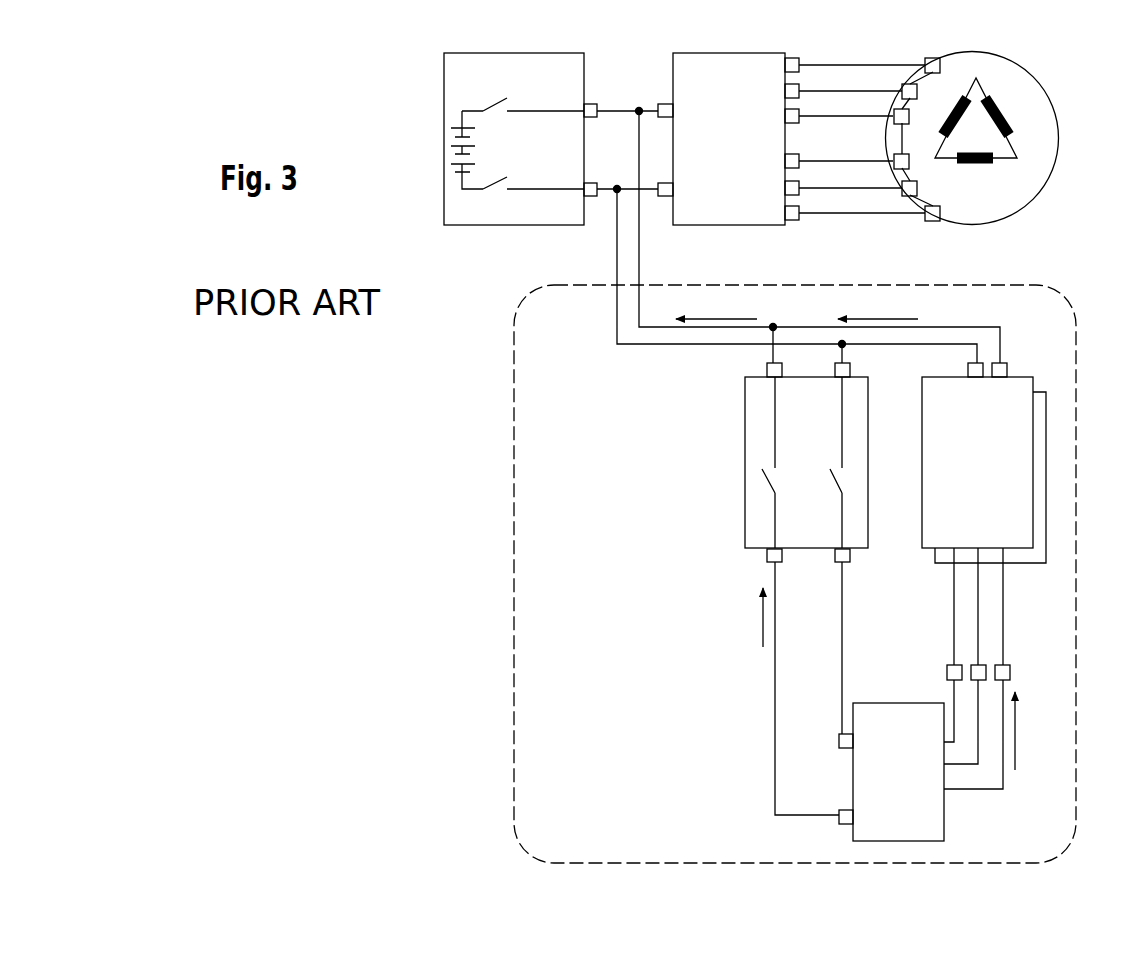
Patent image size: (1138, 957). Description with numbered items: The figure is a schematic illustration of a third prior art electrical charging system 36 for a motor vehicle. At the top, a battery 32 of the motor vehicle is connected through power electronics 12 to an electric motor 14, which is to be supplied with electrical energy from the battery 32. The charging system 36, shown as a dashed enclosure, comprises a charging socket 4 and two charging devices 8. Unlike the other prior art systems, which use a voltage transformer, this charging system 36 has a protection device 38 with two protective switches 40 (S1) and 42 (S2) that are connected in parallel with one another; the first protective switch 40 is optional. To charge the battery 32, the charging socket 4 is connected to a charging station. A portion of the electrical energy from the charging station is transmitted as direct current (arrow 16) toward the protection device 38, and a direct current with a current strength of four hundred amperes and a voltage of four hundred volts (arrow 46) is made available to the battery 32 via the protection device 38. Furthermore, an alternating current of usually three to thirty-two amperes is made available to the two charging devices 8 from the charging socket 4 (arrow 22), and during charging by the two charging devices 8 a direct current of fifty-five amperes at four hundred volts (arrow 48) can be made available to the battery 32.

The charging socket 4 is at (944, 825).
The charging devices 8 is at (921, 495).
The power electronics 12 is at (748, 225).
The electric motor 14 is at (1044, 192).
The arrow 16 is at (763, 608).
The arrow 22 is at (1015, 720).
The battery 32 is at (465, 225).
The charging system 36 is at (1033, 285).
The protection device 38 is at (783, 462).
The first protective switch 40 is at (747, 489).
The second protective switch 42 is at (850, 476).
The arrow 46 is at (715, 319).
The arrow 48 is at (878, 319).